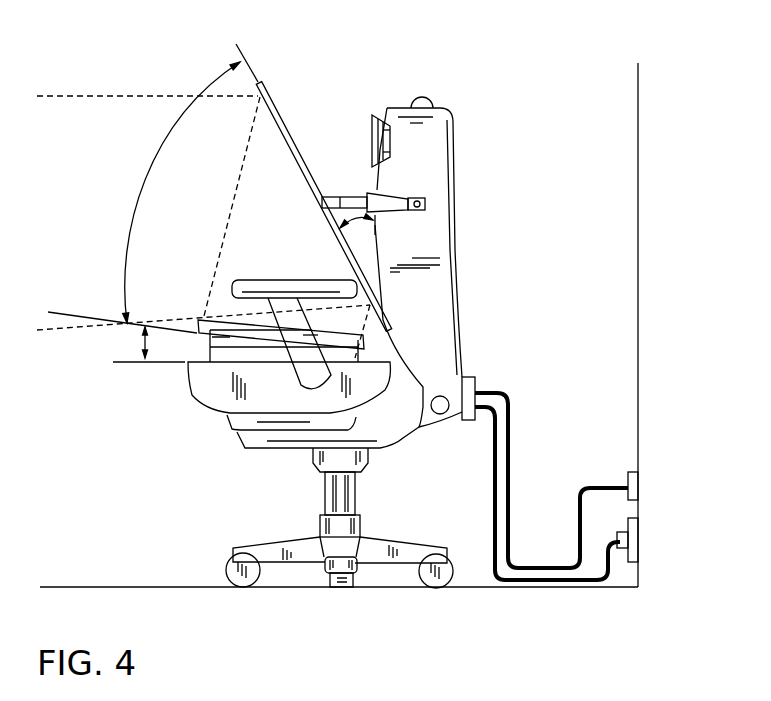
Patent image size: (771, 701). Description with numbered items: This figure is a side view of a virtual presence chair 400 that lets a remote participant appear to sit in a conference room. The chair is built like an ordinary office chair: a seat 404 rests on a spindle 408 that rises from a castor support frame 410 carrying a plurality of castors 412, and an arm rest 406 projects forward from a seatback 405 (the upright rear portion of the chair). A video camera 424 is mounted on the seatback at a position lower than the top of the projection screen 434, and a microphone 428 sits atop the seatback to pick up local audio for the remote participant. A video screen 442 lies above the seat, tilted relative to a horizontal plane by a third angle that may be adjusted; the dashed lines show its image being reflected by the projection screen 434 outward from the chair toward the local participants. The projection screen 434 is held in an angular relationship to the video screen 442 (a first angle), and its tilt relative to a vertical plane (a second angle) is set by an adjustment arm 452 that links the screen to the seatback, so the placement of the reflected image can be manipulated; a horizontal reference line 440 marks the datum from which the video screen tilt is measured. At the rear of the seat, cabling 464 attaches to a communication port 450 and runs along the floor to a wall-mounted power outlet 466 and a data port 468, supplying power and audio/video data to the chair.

The virtual presence chair 400 is at (384, 331).
The seat 404 is at (200, 397).
The backrest 405 is at (447, 185).
The arm rest 406 is at (275, 280).
The spindle 408 is at (353, 497).
The castor support frame 410 is at (283, 540).
The castors 412 is at (223, 572).
The video camera 424 is at (365, 130).
The microphone 428 is at (428, 96).
The projection screen 434 is at (277, 110).
The horizontal reference line 440 is at (135, 367).
The video screen 442 is at (225, 322).
The communication port 450 is at (487, 375).
The adjustment arm 452 is at (347, 197).
The cabling 464 is at (528, 482).
The power outlet 466 is at (647, 530).
The data port 468 is at (647, 480).